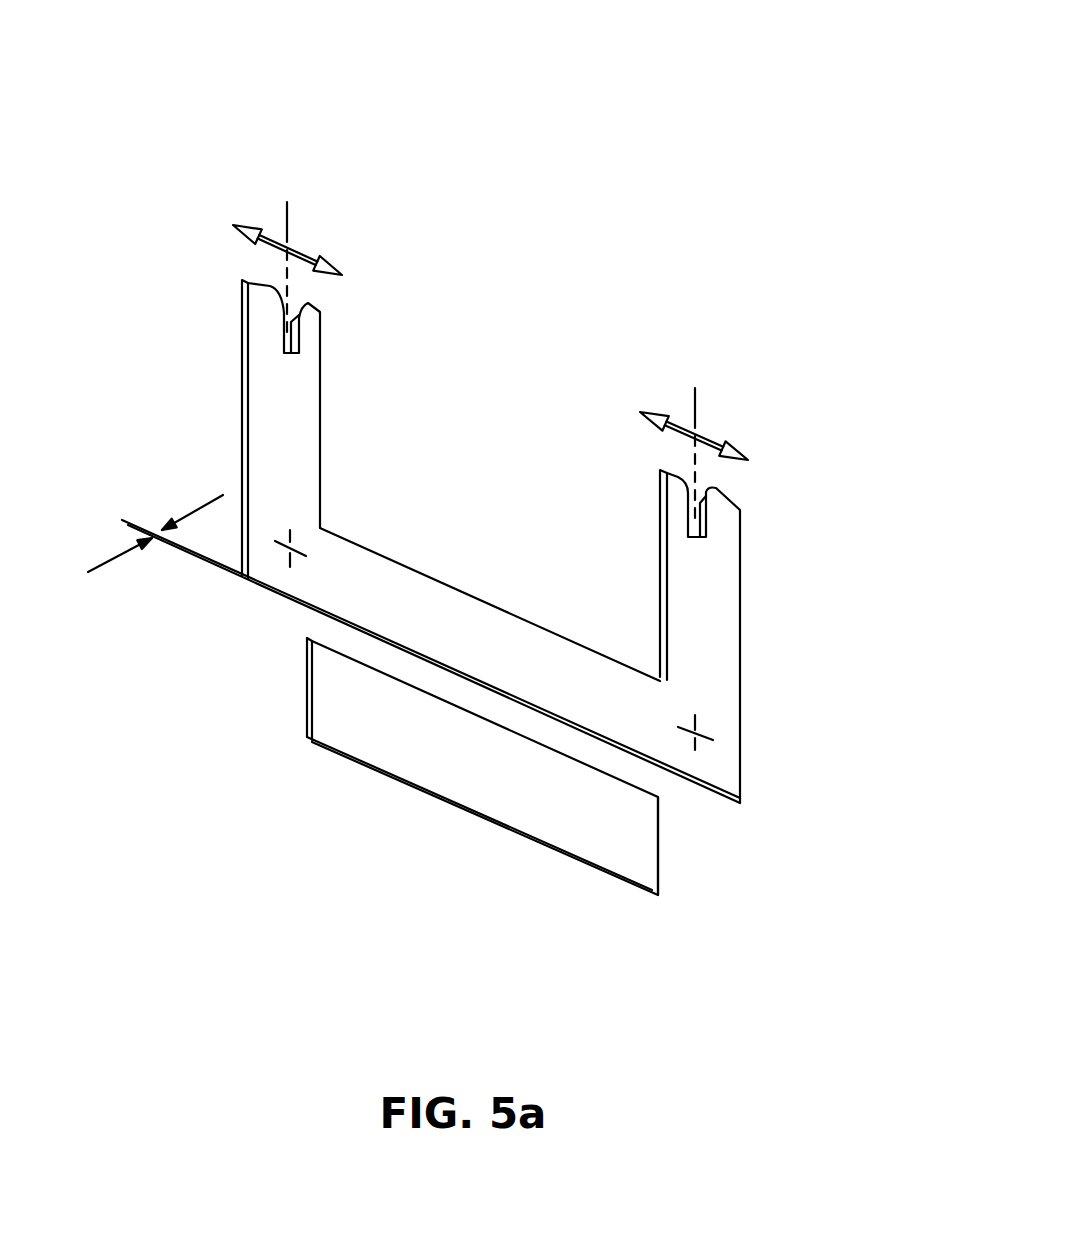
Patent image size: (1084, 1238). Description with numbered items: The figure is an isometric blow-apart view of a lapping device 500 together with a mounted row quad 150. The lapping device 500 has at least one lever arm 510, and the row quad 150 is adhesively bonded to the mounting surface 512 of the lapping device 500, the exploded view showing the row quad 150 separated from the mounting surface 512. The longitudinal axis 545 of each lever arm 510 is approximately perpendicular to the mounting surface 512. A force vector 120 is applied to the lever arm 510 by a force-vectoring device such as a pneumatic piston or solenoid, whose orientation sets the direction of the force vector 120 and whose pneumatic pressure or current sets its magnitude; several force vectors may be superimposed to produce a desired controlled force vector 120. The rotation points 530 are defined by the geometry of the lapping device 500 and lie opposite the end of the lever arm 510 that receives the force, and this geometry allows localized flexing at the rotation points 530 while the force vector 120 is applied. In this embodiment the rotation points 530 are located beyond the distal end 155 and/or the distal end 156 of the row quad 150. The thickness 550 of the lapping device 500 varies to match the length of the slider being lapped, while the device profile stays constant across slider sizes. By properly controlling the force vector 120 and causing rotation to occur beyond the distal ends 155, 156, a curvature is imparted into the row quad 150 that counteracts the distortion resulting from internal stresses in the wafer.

The lapping device 500 is at (310, 113).
The force vector 120 is at (300, 248).
The longitudinal axis 545 is at (282, 218).
The lever arm 510 is at (263, 372).
The mounting surface 512 is at (720, 797).
The rotation points 530 is at (683, 722).
The thickness 550 is at (190, 514).
The row quad 150 is at (623, 827).
The distal end 155 is at (305, 710).
The distal end 156 is at (662, 863).